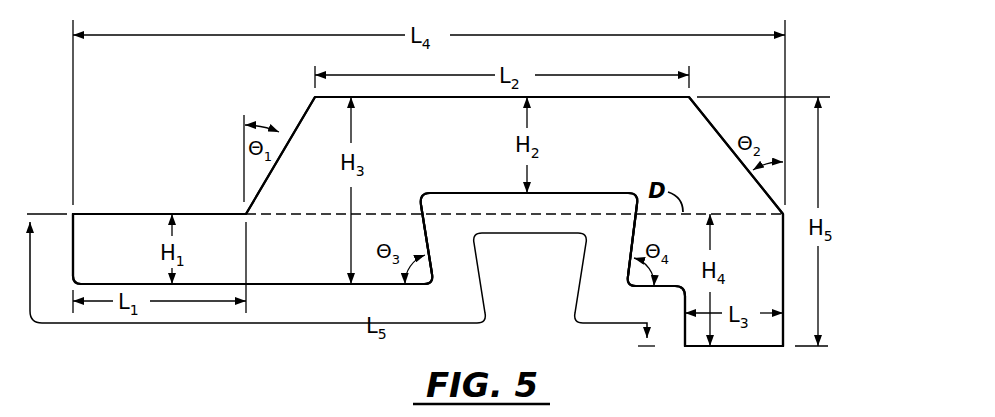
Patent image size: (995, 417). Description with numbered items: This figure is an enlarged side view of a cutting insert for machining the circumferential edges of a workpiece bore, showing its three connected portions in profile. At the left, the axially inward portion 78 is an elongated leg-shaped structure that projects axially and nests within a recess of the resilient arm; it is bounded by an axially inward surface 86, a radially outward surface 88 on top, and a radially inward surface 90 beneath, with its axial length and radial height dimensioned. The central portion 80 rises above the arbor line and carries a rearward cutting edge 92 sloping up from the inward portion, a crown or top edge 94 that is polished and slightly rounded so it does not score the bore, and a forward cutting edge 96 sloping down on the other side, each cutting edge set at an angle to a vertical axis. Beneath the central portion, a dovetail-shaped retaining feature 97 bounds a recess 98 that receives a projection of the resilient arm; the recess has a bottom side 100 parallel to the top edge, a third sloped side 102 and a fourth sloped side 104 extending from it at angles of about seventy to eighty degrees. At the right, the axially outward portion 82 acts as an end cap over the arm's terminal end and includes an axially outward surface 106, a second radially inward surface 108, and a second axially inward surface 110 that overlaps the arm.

The axially inward portion 78 is at (130, 230).
The central portion 80 is at (417, 118).
The axially outward portion 82 is at (752, 293).
The axially inward surface 86 is at (72, 230).
The radially outward surface 88 is at (205, 212).
The radially inward surface 90 is at (283, 286).
The rearward cutting edge 92 is at (303, 107).
The top edge 94 is at (572, 96).
The forward cutting edge 96 is at (717, 128).
The retaining feature 97 is at (535, 200).
The recess 98 is at (509, 280).
The bottom side 100 is at (563, 197).
The third sloped side 102 is at (425, 230).
The fourth sloped side 104 is at (627, 247).
The axially outward surface 106 is at (787, 262).
The second radially inward surface 108 is at (733, 348).
The second axially inward surface 110 is at (683, 321).